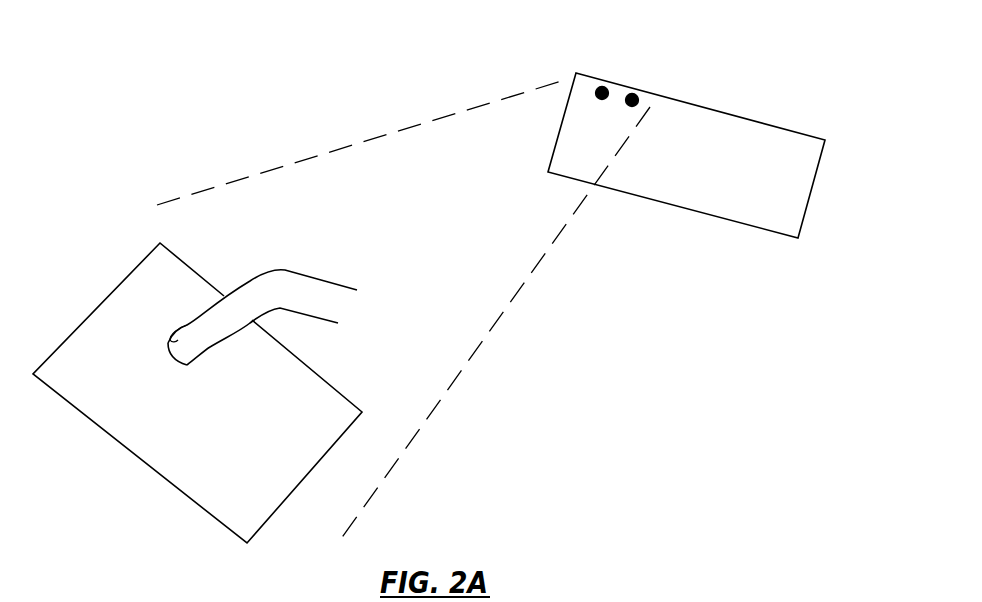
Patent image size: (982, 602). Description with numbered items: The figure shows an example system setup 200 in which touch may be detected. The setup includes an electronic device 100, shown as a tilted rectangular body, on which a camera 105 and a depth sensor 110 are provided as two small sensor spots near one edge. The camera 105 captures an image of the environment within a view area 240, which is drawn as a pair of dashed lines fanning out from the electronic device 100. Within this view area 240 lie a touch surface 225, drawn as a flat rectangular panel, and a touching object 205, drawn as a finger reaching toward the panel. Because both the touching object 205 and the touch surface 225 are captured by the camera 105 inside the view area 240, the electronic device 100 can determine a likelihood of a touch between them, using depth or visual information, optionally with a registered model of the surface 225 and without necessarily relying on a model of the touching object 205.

The system setup 200 is at (266, 94).
The view area 240 is at (407, 130).
The electronic device 100 is at (810, 200).
The camera 105 is at (605, 87).
The depth sensor 110 is at (640, 98).
The touch surface 225 is at (112, 347).
The touching object 205 is at (297, 277).